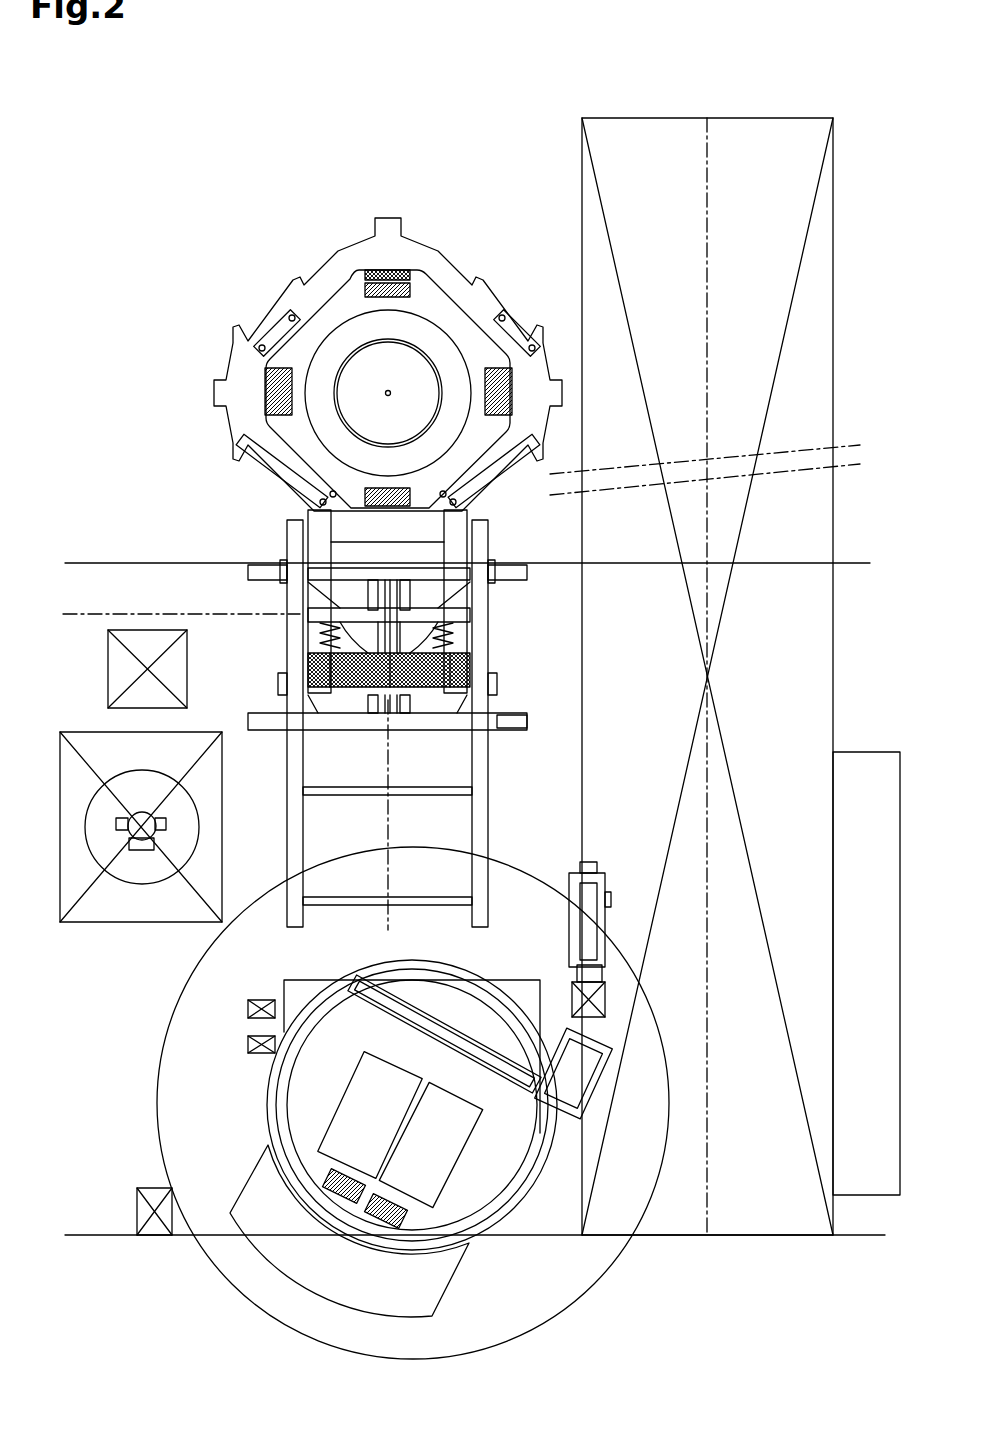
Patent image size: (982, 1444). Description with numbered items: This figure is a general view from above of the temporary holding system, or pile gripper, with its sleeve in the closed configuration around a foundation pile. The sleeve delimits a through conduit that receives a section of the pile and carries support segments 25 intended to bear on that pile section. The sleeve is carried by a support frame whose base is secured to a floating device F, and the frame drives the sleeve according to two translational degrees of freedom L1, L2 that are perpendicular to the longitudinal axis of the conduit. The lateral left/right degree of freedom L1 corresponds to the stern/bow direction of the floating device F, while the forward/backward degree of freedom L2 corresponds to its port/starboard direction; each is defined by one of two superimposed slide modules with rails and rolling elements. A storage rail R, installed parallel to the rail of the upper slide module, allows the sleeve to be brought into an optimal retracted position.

The support segments 25 is at (367, 268).
The floating device F is at (805, 560).
The storage rail R is at (490, 855).
The first translational degree of freedom L1 is at (95, 615).
The second translational degree of freedom L2 is at (385, 867).